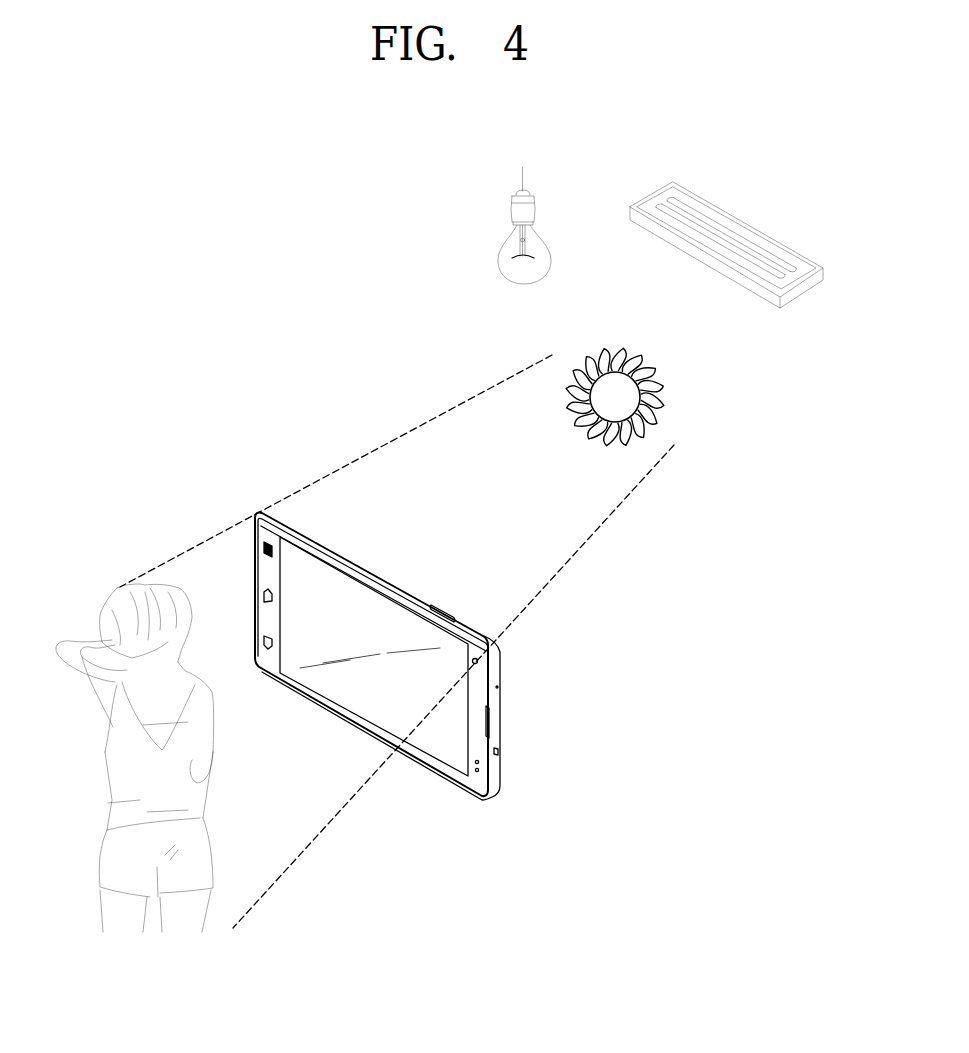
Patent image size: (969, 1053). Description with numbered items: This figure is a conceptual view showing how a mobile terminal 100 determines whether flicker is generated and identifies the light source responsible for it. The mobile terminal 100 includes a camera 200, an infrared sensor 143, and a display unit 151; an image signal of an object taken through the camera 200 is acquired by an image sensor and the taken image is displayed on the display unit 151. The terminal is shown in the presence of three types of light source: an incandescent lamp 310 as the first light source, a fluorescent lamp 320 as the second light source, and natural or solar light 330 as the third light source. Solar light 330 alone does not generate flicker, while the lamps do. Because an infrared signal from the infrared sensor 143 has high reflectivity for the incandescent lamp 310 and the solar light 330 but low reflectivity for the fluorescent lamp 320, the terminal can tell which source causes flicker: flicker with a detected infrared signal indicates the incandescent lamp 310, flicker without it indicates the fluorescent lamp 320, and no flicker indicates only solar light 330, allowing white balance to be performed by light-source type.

The mobile terminal 100 is at (426, 586).
The display unit 151 is at (352, 586).
The camera 200 is at (479, 663).
The infrared sensor 143 is at (480, 772).
The incandescent lamp 310 is at (512, 213).
The fluorescent lamp 320 is at (767, 238).
The natural light (solar light) 330 is at (633, 399).